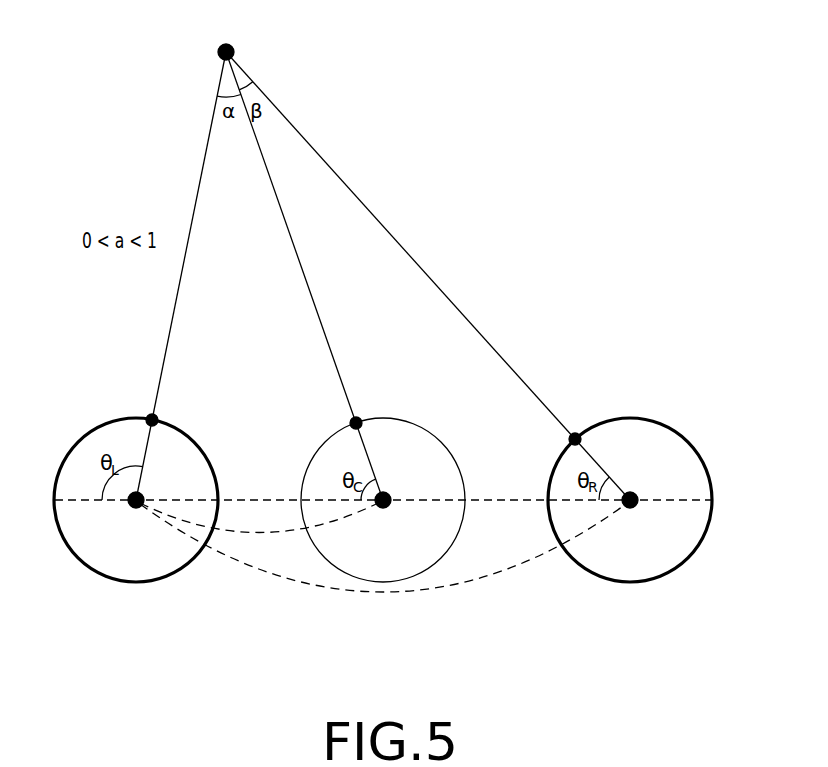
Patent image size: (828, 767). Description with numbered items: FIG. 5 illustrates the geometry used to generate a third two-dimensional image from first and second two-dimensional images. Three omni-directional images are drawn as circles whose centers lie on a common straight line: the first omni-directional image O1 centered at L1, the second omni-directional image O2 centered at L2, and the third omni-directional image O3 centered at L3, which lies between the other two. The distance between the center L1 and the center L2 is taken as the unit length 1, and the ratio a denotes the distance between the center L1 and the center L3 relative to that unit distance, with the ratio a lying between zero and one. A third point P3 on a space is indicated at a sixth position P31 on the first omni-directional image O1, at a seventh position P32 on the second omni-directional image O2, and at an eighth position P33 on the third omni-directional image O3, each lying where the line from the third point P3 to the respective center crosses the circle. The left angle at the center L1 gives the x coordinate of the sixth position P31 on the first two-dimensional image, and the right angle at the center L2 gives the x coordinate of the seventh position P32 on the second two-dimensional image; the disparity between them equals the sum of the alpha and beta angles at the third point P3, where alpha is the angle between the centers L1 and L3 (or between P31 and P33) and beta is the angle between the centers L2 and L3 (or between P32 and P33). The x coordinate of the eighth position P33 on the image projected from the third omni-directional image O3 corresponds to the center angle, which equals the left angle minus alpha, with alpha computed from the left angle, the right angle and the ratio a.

The normalized distance between centers L1 and L2 1 is at (383, 563).
The distance ratio a is at (259, 529).
The third point P3 is at (224, 36).
The sixth position P31 is at (170, 410).
The seventh position P32 is at (583, 422).
The eighth position P33 is at (373, 409).
The center of the first omni-directional image L1 is at (133, 513).
The center of the second omni-directional image L2 is at (633, 516).
The center of the third omni-directional image L3 is at (385, 513).
The first omni-directional image O1 is at (70, 431).
The second omni-directional image O2 is at (676, 412).
The third omni-directional image O3 is at (431, 417).